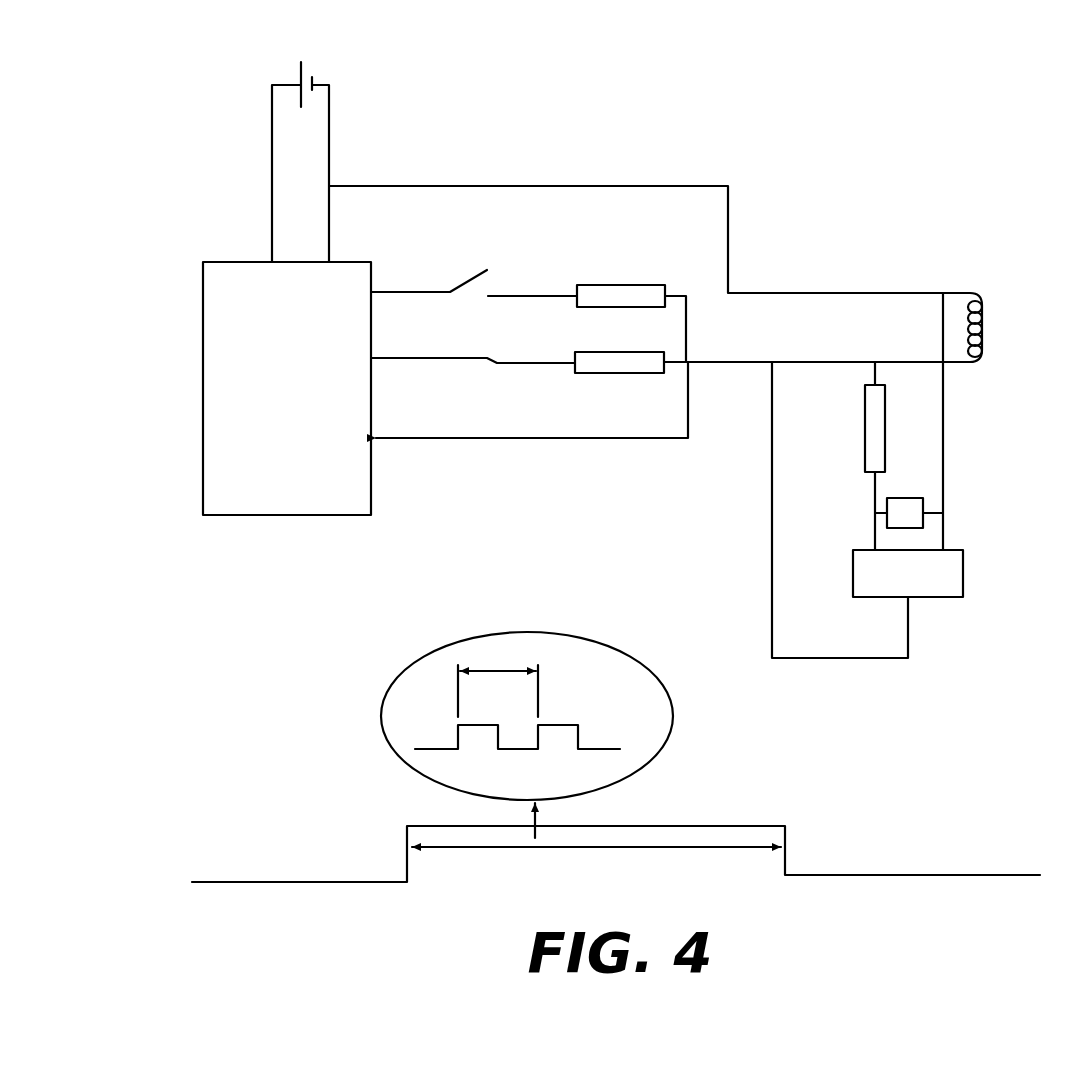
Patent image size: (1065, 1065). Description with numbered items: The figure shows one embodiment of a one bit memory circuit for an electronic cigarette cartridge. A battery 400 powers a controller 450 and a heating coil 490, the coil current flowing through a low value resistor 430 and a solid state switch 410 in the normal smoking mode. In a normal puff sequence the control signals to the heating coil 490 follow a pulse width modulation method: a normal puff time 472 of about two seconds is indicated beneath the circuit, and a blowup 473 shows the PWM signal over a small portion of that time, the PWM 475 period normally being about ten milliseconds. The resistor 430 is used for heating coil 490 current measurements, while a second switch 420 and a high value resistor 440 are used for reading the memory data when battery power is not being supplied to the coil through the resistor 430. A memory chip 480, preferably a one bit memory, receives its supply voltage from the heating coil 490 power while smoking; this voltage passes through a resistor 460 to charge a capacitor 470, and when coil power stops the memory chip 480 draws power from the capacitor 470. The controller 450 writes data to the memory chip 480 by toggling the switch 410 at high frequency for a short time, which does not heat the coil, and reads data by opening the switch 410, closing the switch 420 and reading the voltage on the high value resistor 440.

The battery 400 is at (331, 84).
The switch 410 is at (468, 282).
The switch 420 is at (440, 360).
The resistor 430 is at (622, 285).
The resistor 440 is at (602, 373).
The controller 450 is at (282, 482).
The resistor 460 is at (885, 410).
The capacitor 470 is at (903, 498).
The memory chip 480 is at (963, 568).
The heating coil 490 is at (990, 325).
The normal puff time 472 is at (507, 848).
The blowup 473 is at (380, 743).
The PWM period 475 is at (667, 682).